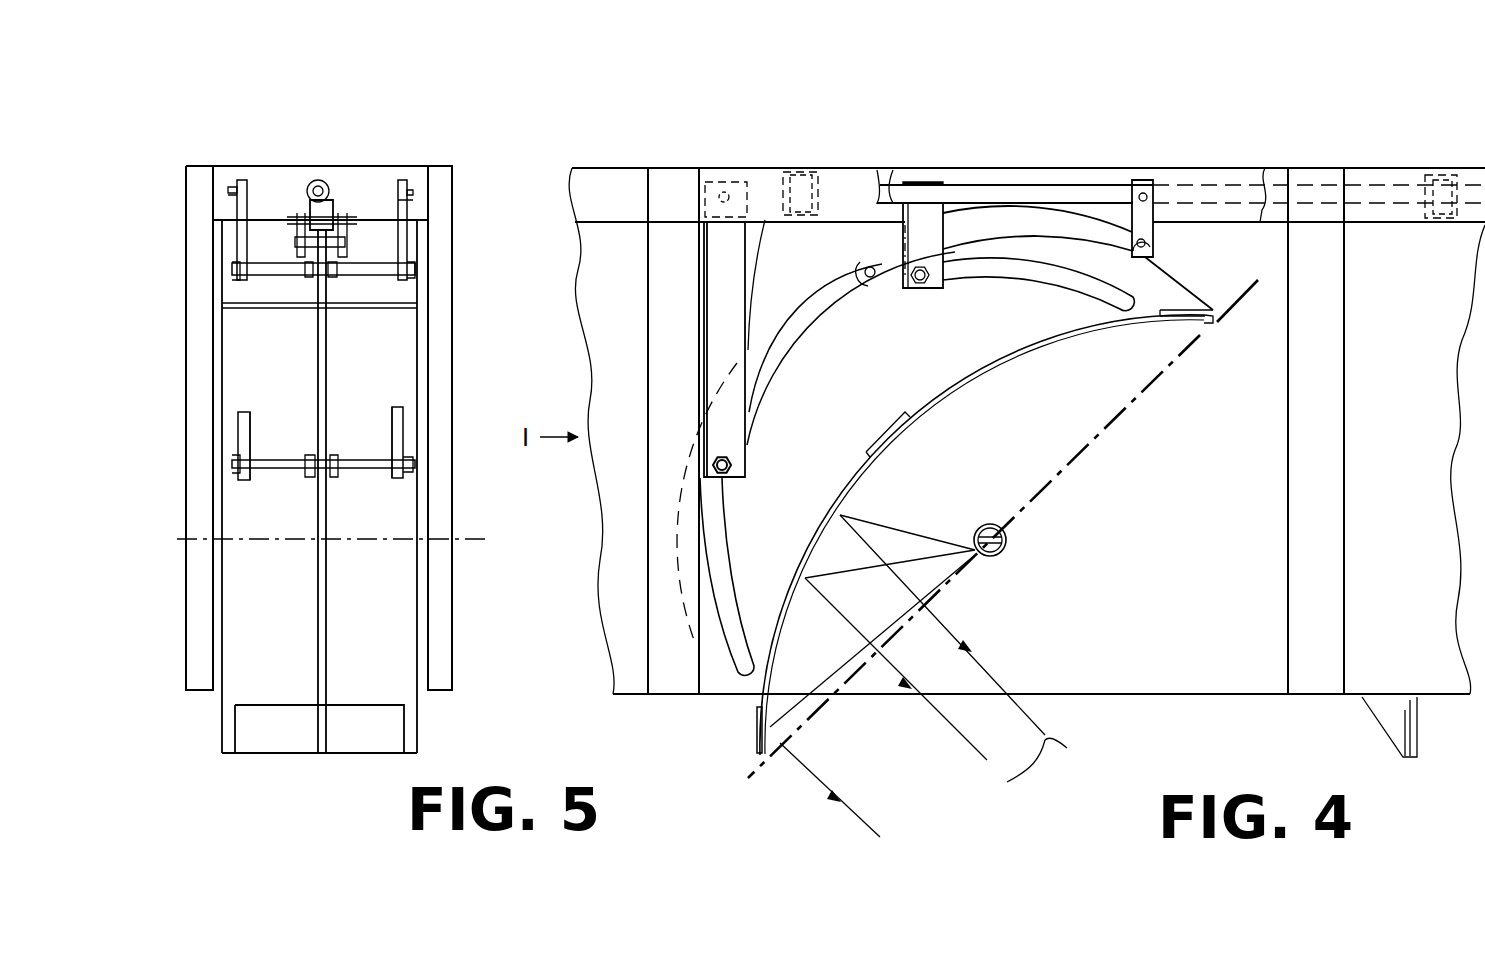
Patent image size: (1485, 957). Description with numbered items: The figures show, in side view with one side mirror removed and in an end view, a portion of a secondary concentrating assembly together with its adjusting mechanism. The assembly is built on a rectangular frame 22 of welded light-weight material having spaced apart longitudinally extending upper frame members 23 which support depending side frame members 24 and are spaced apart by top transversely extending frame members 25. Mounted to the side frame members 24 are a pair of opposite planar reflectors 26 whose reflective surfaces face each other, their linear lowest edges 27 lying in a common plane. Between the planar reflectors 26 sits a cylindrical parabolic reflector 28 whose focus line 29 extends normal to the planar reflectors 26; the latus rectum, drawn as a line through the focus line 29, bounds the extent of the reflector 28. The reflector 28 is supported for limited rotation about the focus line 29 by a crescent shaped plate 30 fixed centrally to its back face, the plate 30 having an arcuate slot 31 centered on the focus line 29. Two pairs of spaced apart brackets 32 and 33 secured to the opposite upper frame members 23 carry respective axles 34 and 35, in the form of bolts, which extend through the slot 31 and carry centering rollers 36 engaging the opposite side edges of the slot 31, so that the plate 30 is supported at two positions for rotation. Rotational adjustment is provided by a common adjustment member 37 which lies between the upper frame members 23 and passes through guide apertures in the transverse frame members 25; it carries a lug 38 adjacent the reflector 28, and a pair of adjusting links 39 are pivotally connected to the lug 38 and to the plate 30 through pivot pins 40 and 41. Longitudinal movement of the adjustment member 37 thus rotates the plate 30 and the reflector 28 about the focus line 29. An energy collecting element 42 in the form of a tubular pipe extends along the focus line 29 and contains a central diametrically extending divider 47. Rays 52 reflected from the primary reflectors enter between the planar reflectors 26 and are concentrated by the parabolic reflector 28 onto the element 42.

In FIG. 4, the rectangular frame 22 is at (1234, 150).
In FIG. 5, the upper frame members 23 is at (430, 168).
In FIG. 4, the upper frame members 23 is at (1432, 178).
In FIG. 5, the side frame members 24 is at (200, 682).
In FIG. 4, the side frame members 24 is at (660, 685).
In FIG. 5, the top transversely extending frame members 25 is at (345, 186).
In FIG. 4, the top transversely extending frame members 25 is at (800, 172).
In FIG. 5, the planar reflectors 26 is at (434, 410).
In FIG. 4, the planar reflectors 26 is at (1192, 682).
In FIG. 5, the lowest edges 27 is at (422, 694).
In FIG. 4, the cylindrical parabolic reflector 28 is at (848, 680).
In FIG. 5, the focus line 29 is at (475, 545).
In FIG. 4, the focus line 29 is at (988, 522).
In FIG. 5, the crescent shaped plate 30 is at (322, 735).
In FIG. 4, the crescent shaped plate 30 is at (757, 728).
In FIG. 4, the arcuate slot 31 is at (733, 680).
In FIG. 5, the brackets 32 is at (405, 236).
In FIG. 4, the brackets 32 is at (882, 205).
In FIG. 5, the brackets 33 is at (405, 445).
In FIG. 4, the brackets 33 is at (740, 250).
In FIG. 5, the axle 34 is at (385, 270).
In FIG. 4, the axle 34 is at (930, 250).
In FIG. 5, the axle 35 is at (380, 468).
In FIG. 4, the axle 35 is at (712, 468).
In FIG. 5, the centering rollers 36 is at (320, 275).
In FIG. 5, the adjustment member 37 is at (310, 215).
In FIG. 4, the adjustment member 37 is at (1166, 190).
In FIG. 5, the lug 38 is at (315, 180).
In FIG. 4, the lug 38 is at (1138, 197).
In FIG. 5, the adjusting links 39 is at (225, 197).
In FIG. 4, the adjusting links 39 is at (1003, 222).
In FIG. 5, the pivot pin 40 is at (296, 222).
In FIG. 4, the pivot pin 40 is at (1147, 238).
In FIG. 5, the pivot pin 41 is at (395, 236).
In FIG. 4, the pivot pin 41 is at (870, 266).
In FIG. 4, the energy collecting element 42 is at (1008, 560).
In FIG. 4, the divider 47 is at (1008, 540).
In FIG. 4, the reflected rays 52 is at (1045, 782).